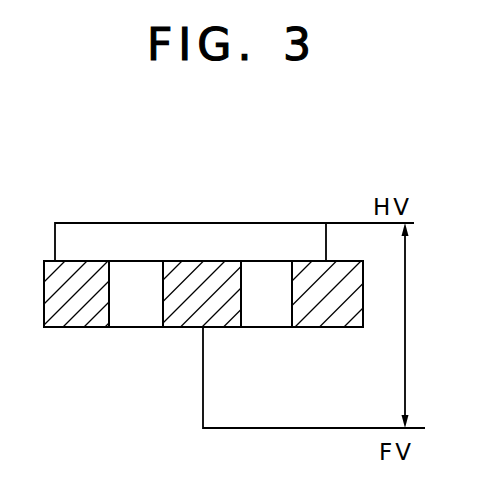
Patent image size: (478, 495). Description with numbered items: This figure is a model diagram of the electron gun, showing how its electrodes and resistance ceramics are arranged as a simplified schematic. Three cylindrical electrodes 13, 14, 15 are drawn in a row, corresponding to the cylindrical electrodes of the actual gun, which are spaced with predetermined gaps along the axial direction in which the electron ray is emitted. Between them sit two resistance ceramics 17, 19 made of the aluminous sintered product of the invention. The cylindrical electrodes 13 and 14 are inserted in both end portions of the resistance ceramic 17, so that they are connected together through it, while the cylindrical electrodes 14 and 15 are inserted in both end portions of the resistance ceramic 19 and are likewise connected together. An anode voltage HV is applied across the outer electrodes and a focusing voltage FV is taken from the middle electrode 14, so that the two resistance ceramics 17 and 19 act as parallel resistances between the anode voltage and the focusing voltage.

The cylindrical electrode 13 is at (68, 328).
The cylindrical electrode 14 is at (186, 328).
The cylindrical electrode 15 is at (341, 328).
The resistance ceramic 17 is at (140, 328).
The resistance ceramic 19 is at (276, 328).